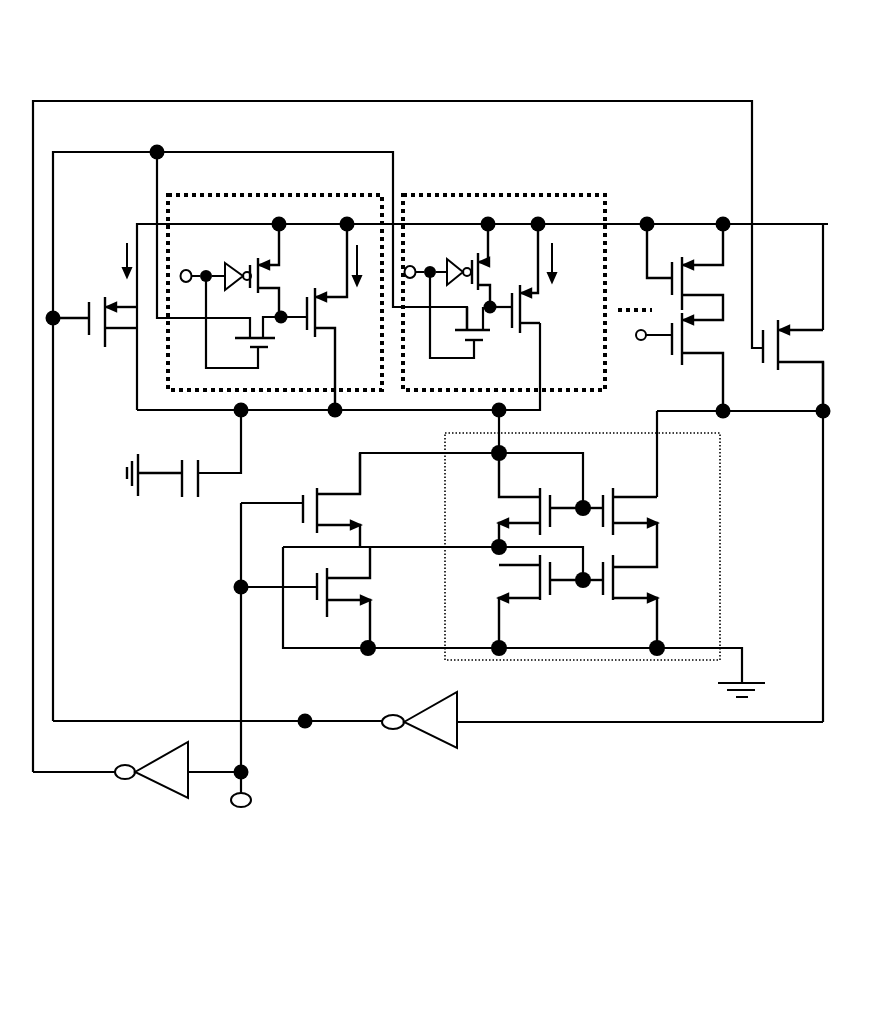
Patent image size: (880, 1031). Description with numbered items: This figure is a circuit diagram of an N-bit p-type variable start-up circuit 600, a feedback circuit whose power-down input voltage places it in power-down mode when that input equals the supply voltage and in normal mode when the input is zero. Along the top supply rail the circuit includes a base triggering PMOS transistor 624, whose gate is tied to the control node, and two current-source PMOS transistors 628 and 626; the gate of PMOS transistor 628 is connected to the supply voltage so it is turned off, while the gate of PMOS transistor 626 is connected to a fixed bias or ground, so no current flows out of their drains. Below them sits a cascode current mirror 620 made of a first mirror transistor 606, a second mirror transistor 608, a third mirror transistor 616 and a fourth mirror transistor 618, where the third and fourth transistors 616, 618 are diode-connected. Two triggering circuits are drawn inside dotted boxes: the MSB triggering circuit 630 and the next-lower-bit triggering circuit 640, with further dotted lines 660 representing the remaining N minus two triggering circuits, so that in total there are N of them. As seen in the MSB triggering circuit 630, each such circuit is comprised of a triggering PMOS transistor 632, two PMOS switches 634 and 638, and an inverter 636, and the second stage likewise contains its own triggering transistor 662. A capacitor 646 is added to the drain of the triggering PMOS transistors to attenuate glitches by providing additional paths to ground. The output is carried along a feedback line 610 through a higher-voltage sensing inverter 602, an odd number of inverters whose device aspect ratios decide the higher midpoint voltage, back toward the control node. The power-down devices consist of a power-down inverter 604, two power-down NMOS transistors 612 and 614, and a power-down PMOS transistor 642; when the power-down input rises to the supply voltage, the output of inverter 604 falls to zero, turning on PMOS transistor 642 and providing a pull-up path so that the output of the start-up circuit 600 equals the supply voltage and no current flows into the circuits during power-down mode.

The N-bit p-type variable start-up circuit 600 is at (457, 52).
The higher-voltage sensing inverter 602 is at (437, 747).
The power-down inverter 604 is at (151, 762).
The transistor MN1 606 is at (665, 500).
The transistor MN2 608 is at (665, 570).
The feedback line 610 is at (640, 722).
The power-down NMOS transistor 612 is at (338, 489).
The power-down NMOS transistor 614 is at (383, 610).
The transistor MN3 616 is at (507, 500).
The transistor MN4 618 is at (510, 582).
The cascode current mirror 620 is at (720, 632).
The base triggering PMOS transistor 624 is at (116, 303).
The PMOS transistor current source 626 is at (712, 344).
The PMOS transistor current source 628 is at (730, 277).
The MSB triggering circuit 630 is at (372, 194).
The triggering PMOS transistor 632 is at (345, 323).
The PMOS switch 634 is at (275, 349).
The inverter 636 is at (226, 263).
The PMOS switch 638 is at (288, 280).
The (MSB-1) triggering circuit 640 is at (605, 195).
The power-down PMOS transistor 642 is at (828, 323).
The capacitor 646 is at (190, 462).
The (N-2) triggering circuits 660 is at (618, 310).
The triggering PMOS transistor 662 is at (537, 309).